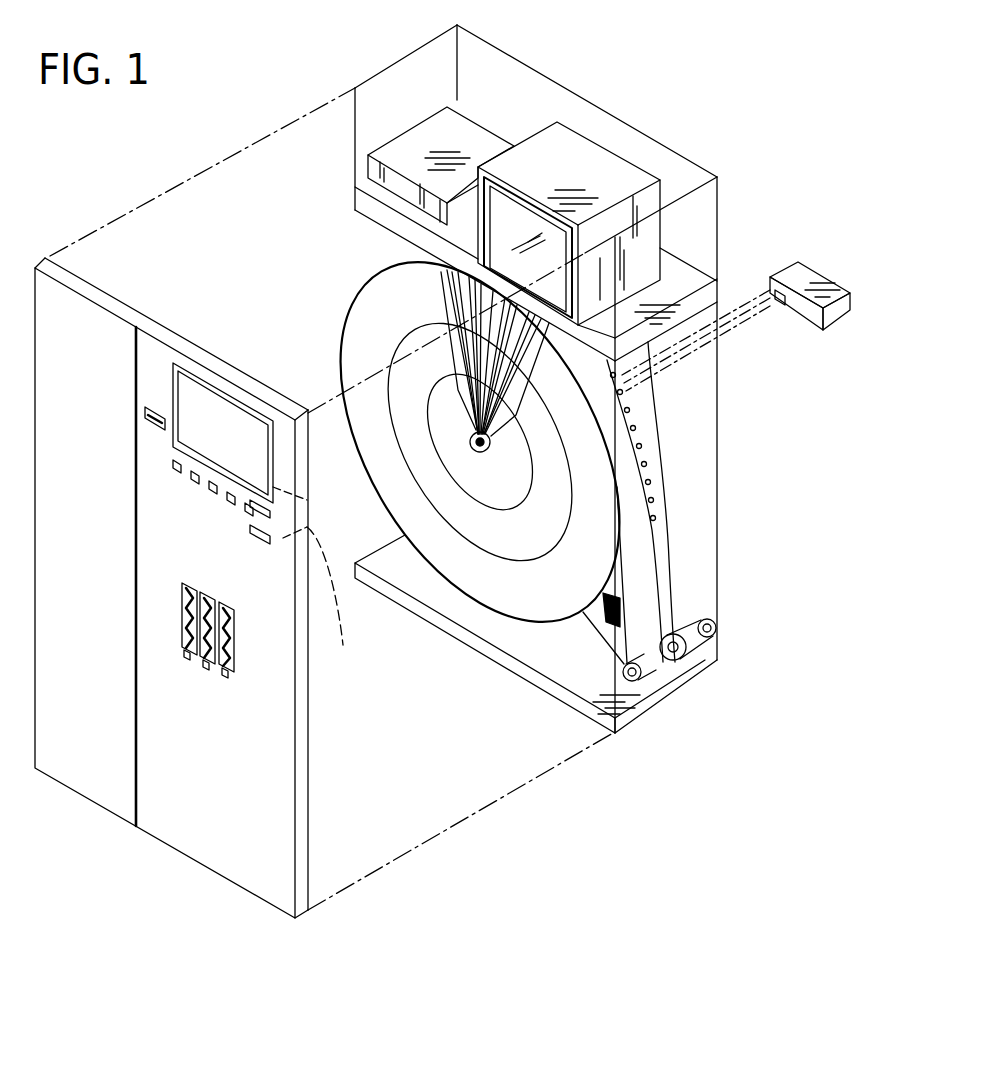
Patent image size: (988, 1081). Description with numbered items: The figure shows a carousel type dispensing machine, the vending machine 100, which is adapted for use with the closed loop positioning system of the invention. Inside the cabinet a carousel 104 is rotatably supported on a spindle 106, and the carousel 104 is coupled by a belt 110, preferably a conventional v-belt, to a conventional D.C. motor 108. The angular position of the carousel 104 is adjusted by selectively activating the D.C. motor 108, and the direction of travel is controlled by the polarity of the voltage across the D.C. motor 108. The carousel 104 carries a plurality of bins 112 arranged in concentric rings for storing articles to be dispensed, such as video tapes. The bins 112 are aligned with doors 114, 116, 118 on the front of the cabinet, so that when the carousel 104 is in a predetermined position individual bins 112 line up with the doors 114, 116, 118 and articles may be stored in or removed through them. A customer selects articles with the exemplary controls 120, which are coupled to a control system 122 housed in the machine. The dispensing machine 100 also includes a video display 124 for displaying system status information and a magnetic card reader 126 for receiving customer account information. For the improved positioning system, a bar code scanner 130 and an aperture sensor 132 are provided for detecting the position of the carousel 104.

The vending machine 100 is at (582, 30).
The carousel 104 is at (655, 400).
The spindle 106 is at (482, 452).
The D.C. motor 108 is at (688, 622).
The belt 110 is at (650, 584).
The bins 112 is at (447, 344).
The door 114 is at (193, 583).
The door 116 is at (211, 594).
The door 118 is at (233, 620).
The controls 120 is at (170, 468).
The control system 122 is at (452, 117).
The video display 124 is at (606, 158).
The magnetic card reader 126 is at (347, 647).
The bar code scanner 130 is at (810, 275).
The aperture sensor 132 is at (505, 658).